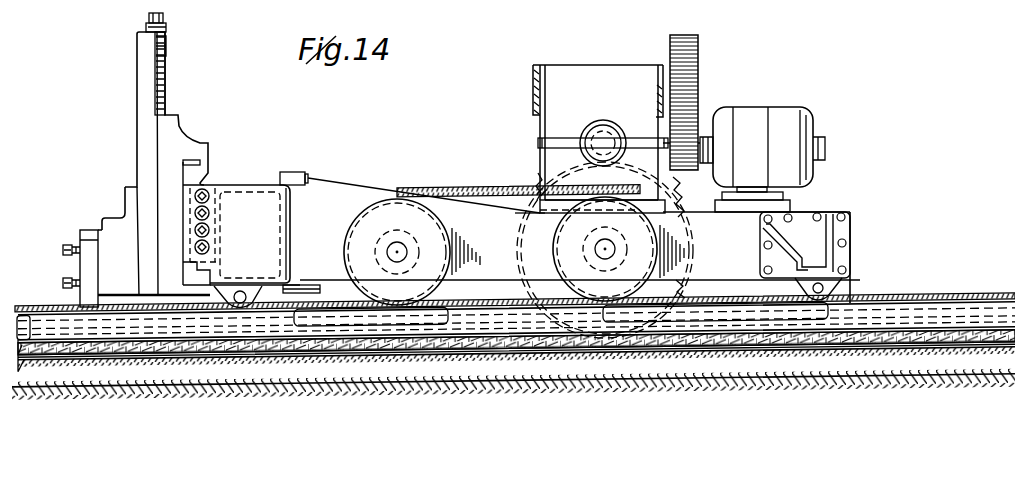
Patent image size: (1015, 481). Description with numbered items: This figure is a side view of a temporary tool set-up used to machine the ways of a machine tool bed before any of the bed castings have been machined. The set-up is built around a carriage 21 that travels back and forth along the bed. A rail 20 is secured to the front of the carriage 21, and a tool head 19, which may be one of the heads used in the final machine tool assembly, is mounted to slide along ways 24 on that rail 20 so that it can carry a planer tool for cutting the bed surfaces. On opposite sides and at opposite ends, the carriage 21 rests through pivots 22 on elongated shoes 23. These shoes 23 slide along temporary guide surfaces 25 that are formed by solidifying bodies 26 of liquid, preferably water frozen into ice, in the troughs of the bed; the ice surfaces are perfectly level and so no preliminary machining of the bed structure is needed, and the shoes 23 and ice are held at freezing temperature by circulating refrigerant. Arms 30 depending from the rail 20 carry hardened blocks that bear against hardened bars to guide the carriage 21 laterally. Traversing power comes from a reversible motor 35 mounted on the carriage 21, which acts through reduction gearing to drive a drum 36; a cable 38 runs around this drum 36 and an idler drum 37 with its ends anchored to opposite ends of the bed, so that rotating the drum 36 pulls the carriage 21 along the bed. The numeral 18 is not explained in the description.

The machine 18 is at (809, 5).
The tool head 19 is at (163, 170).
The rail 20 is at (252, 190).
The carriage 21 is at (350, 197).
The pivot 22 is at (240, 292).
The elongated shoe 23 is at (60, 330).
The way 24 is at (190, 175).
The temporary guide surface 25 is at (988, 330).
The solidified body of liquid 26 is at (957, 338).
The arm 30 is at (293, 287).
The reversible motor 35 is at (756, 109).
The drum 36 is at (561, 251).
The idler drum 37 is at (356, 243).
The cable 38 is at (482, 195).